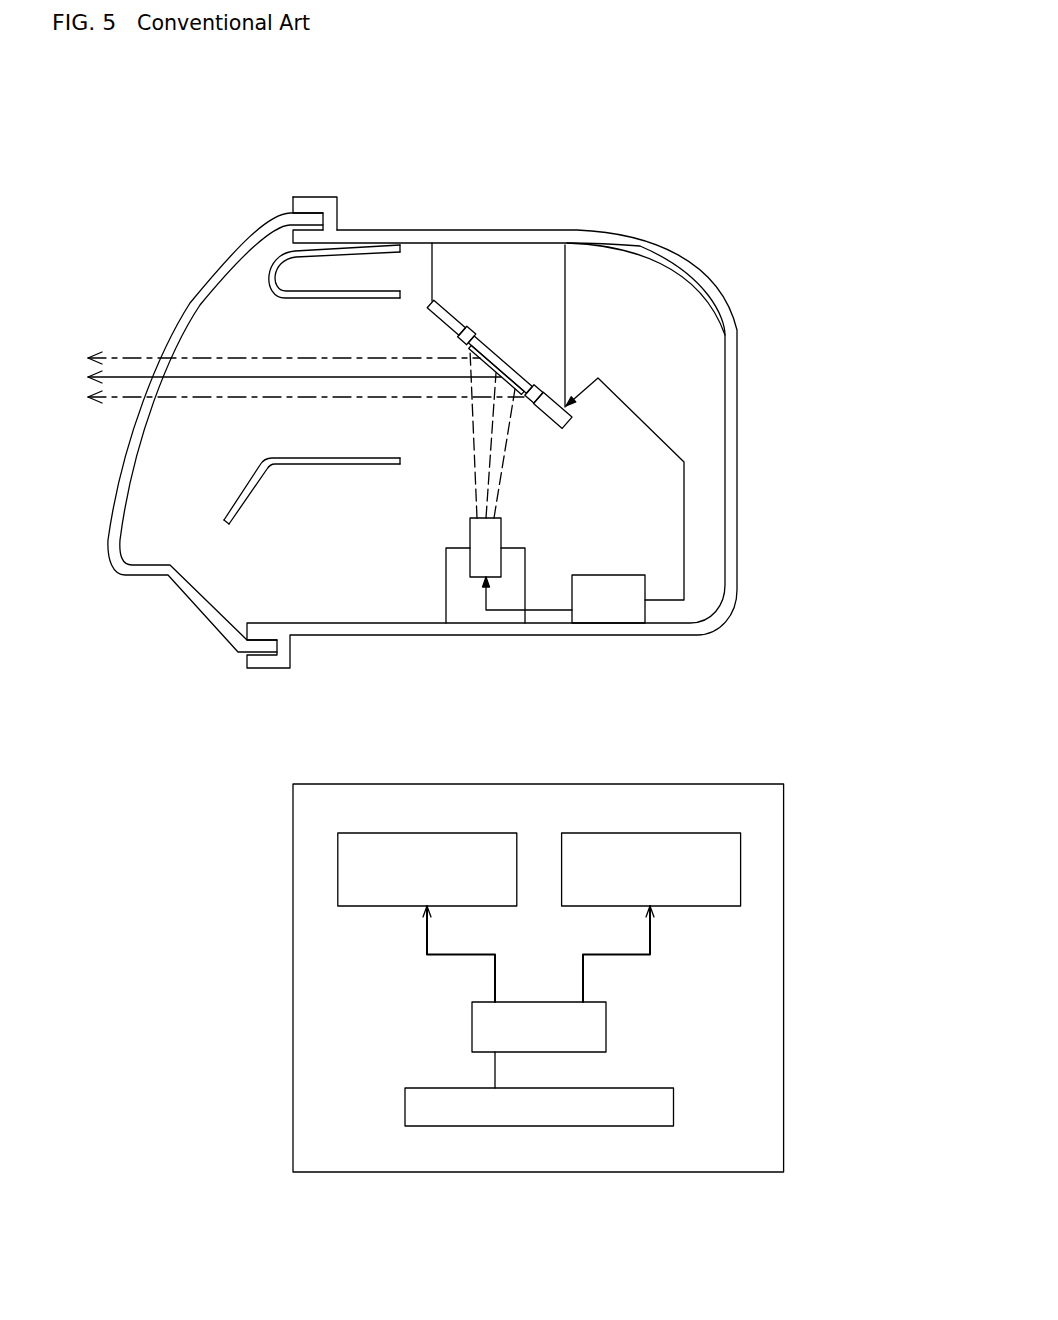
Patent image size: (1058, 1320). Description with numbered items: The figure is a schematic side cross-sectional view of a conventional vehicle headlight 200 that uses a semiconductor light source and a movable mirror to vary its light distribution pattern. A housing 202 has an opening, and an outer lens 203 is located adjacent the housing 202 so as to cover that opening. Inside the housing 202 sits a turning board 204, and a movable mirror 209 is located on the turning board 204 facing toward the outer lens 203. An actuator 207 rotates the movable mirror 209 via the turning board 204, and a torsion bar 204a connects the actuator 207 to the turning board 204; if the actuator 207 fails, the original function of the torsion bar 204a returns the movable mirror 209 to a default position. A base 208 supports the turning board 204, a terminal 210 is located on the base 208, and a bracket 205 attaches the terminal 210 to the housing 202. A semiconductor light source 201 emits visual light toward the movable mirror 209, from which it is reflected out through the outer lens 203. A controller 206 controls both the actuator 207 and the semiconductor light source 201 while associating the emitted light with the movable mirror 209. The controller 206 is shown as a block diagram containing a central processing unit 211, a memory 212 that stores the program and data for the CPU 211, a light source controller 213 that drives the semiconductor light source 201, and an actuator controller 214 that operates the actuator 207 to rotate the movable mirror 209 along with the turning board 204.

The conventional vehicle headlight 200 is at (428, 147).
The semiconductor light source 201 is at (470, 523).
The housing 202 is at (627, 242).
The outer lens 203 is at (230, 255).
The turning board 204 is at (499, 355).
The torsion bar 204a is at (462, 330).
The bracket 205 is at (565, 315).
The controller 206 is at (587, 801).
The actuator 207 is at (435, 268).
The base 208 is at (547, 424).
The movable mirror 209 is at (512, 375).
The terminal 210 is at (573, 418).
The central processing unit (CPU) 211 is at (606, 1024).
The memory 212 is at (674, 1108).
The light source controller 213 is at (741, 867).
The actuator controller 214 is at (338, 869).